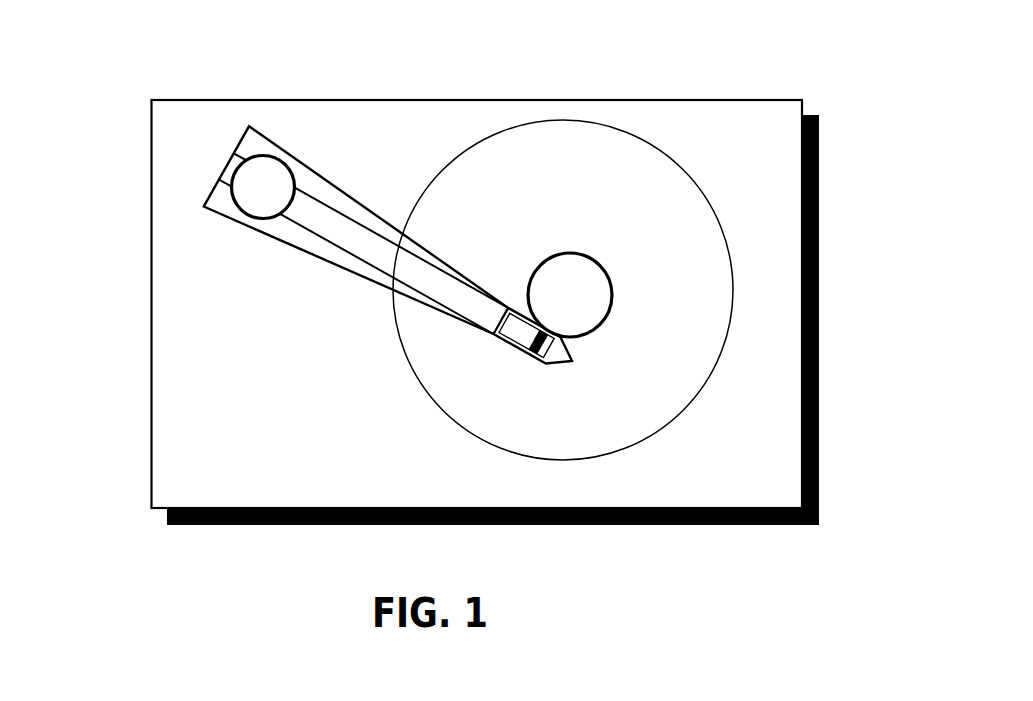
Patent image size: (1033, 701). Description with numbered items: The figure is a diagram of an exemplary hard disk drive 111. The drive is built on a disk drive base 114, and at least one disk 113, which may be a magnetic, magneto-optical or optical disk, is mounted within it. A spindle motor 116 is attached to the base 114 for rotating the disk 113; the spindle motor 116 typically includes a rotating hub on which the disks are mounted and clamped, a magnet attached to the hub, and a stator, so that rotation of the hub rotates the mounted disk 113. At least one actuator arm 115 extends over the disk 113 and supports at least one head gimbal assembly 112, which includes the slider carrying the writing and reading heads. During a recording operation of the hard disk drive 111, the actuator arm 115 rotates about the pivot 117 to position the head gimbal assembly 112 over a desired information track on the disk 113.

The hard disk drive 111 is at (451, 82).
The head gimbal assembly 112 is at (535, 355).
The disk 113 is at (495, 180).
The disk drive base 114 is at (213, 475).
The actuator arm 115 is at (382, 262).
The spindle motor 116 is at (583, 270).
The pivot 117 is at (257, 190).